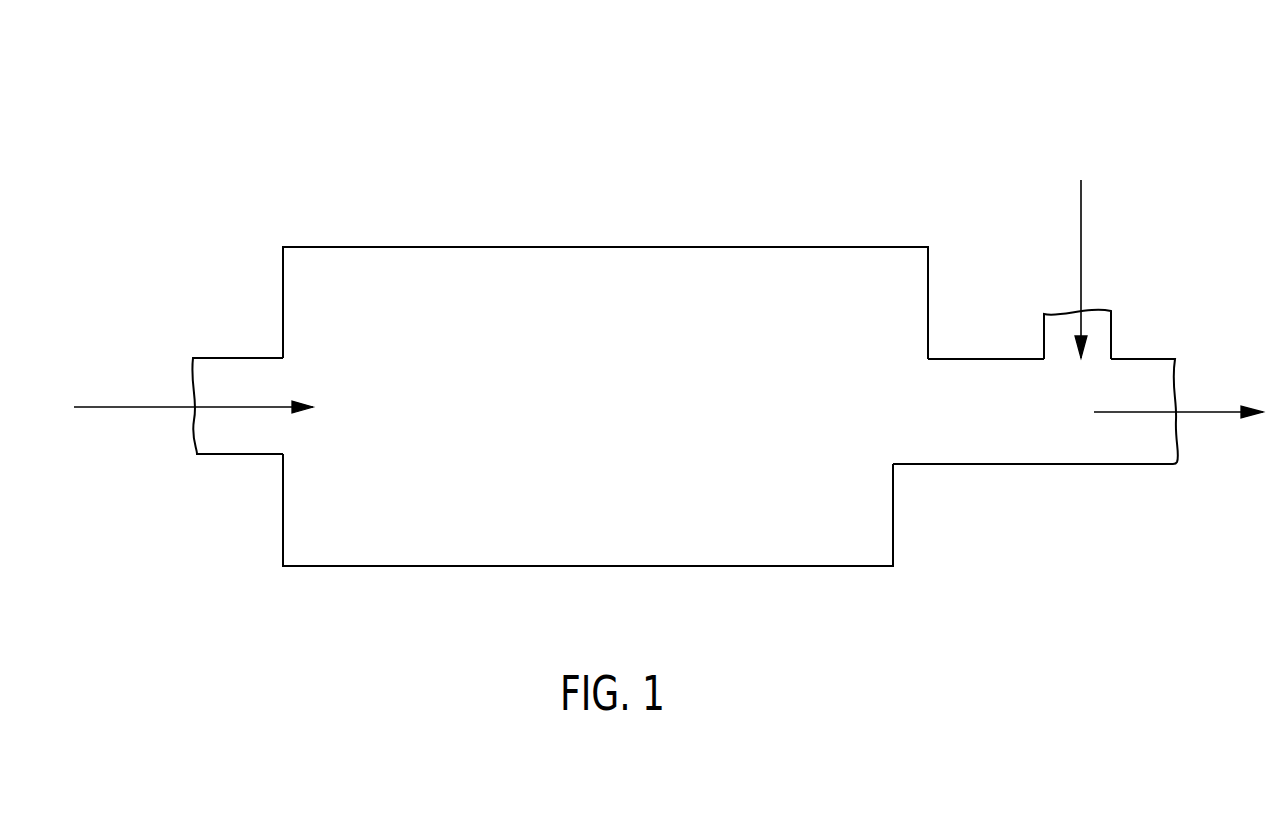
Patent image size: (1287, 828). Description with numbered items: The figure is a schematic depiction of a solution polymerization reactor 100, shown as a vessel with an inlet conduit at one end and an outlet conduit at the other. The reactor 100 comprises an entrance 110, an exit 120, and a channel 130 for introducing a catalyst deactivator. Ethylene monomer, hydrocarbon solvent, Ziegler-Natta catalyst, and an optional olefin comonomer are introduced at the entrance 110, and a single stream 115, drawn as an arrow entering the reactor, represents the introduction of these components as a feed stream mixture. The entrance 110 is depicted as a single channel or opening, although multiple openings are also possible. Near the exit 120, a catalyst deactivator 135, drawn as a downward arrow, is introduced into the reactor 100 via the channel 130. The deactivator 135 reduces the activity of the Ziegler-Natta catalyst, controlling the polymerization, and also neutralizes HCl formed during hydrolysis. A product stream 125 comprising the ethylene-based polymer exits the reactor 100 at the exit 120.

The solution polymerization reactor 100 is at (788, 112).
The entrance 110 is at (240, 357).
The stream 115 is at (118, 408).
The exit 120 is at (963, 357).
The product stream 125 is at (1207, 413).
The channel 130 is at (1112, 338).
The catalyst deactivator 135 is at (1082, 260).